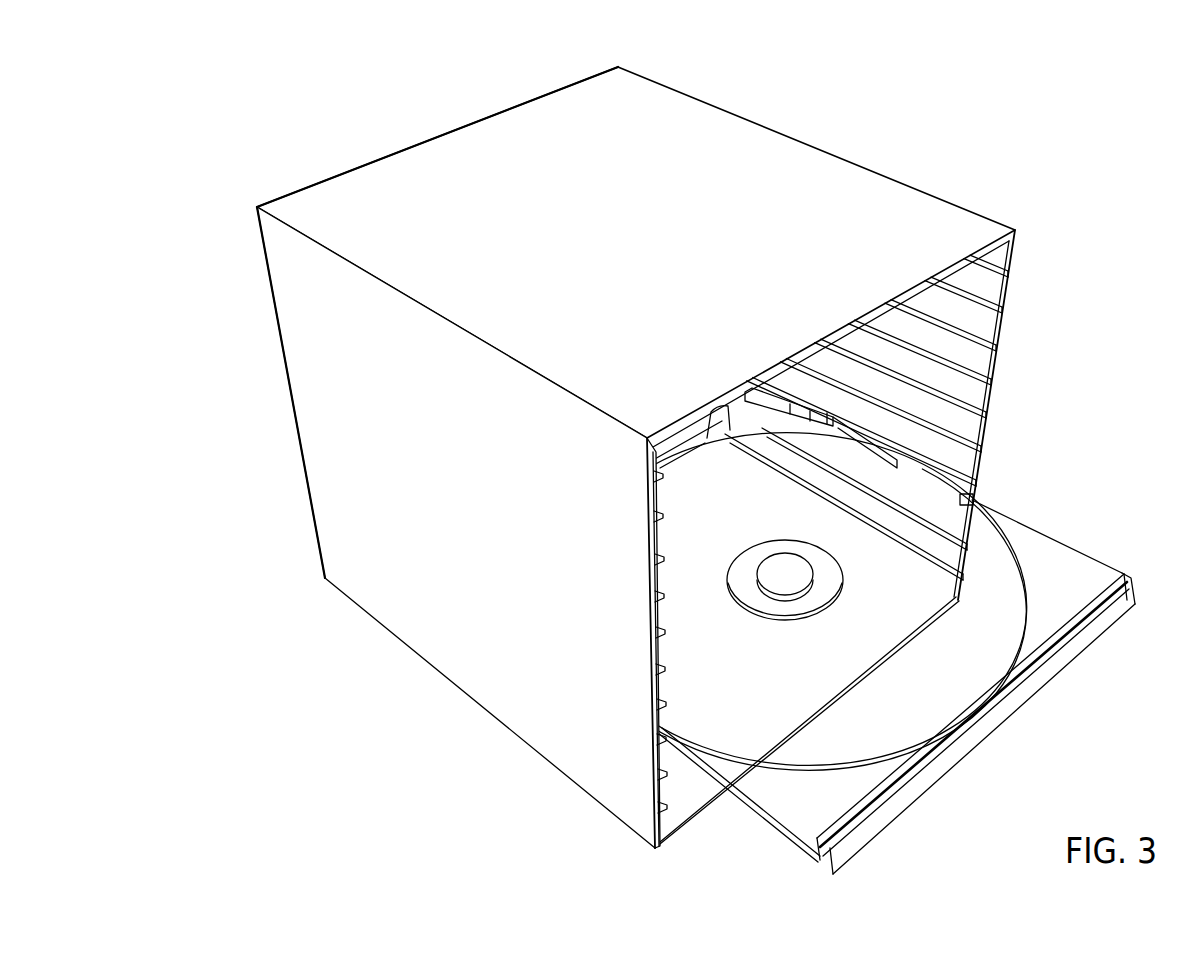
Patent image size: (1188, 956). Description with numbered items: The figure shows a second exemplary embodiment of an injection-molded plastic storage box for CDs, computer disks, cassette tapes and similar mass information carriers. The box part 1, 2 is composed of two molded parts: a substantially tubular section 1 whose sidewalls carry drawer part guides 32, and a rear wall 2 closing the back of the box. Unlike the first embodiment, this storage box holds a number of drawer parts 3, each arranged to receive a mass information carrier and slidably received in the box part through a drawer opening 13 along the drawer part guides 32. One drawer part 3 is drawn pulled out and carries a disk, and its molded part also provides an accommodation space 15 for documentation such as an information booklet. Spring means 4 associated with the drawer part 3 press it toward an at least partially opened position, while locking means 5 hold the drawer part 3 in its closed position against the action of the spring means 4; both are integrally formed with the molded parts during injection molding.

The bottom part 1 is at (680, 509).
The cover part 2 is at (279, 335).
The drawer part 3 is at (846, 684).
The spring means 4 is at (716, 424).
The locking means 5 is at (763, 422).
The drawer opening 13 is at (883, 539).
The accommodation space 15 is at (826, 882).
The drawer part guides 32 is at (1005, 313).